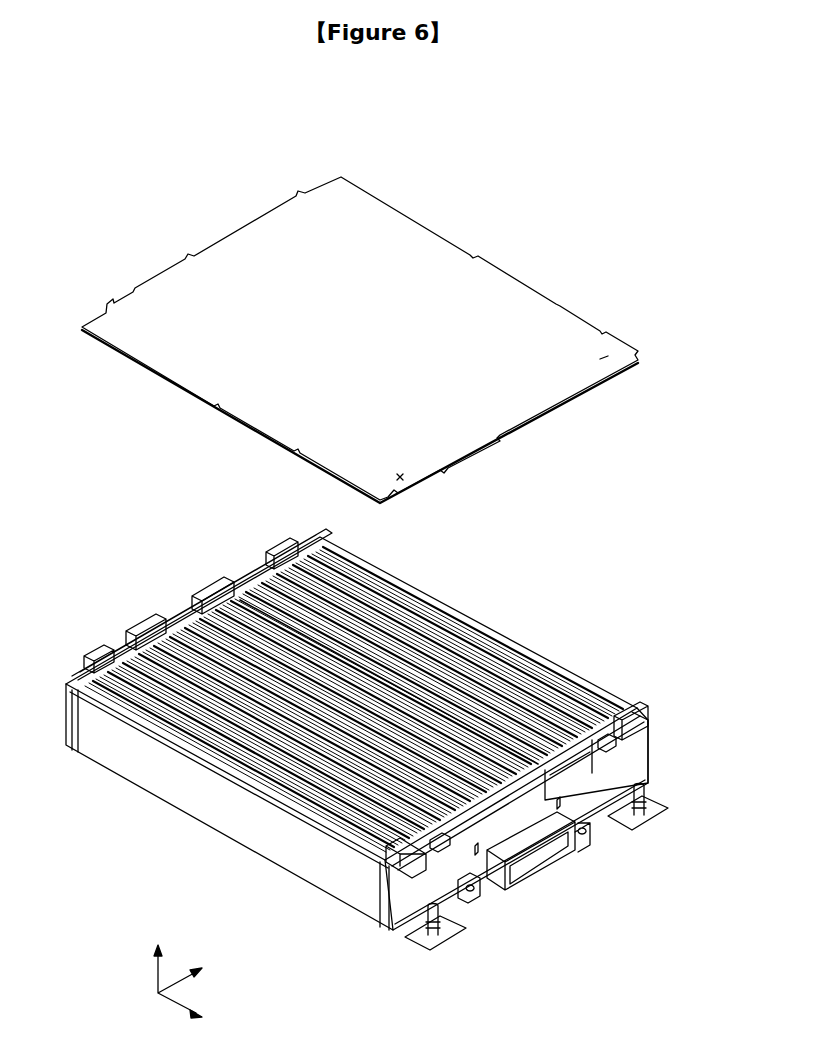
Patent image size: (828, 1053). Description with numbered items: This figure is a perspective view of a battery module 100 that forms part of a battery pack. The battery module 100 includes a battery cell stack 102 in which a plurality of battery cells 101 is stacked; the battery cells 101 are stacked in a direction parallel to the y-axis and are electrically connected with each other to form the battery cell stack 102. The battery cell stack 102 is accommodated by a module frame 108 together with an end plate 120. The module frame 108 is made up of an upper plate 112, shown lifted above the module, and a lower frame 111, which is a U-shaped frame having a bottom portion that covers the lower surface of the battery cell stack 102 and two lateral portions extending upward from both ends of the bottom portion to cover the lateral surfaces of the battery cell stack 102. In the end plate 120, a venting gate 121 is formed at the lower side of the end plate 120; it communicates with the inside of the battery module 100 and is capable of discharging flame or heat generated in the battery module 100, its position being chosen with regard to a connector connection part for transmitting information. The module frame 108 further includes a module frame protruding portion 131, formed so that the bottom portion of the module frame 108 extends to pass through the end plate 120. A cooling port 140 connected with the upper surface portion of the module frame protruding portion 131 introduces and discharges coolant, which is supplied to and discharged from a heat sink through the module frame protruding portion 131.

The battery module 100 is at (291, 126).
The battery cell 101 is at (537, 678).
The battery cell stack 102 is at (262, 792).
The module frame 108 is at (92, 423).
The lower frame 111 is at (100, 728).
The upper plate 112 is at (233, 373).
The end plate 120 is at (640, 757).
The venting gate 121 is at (555, 862).
The module frame protruding portion 131 is at (442, 928).
The cooling port 140 is at (420, 930).